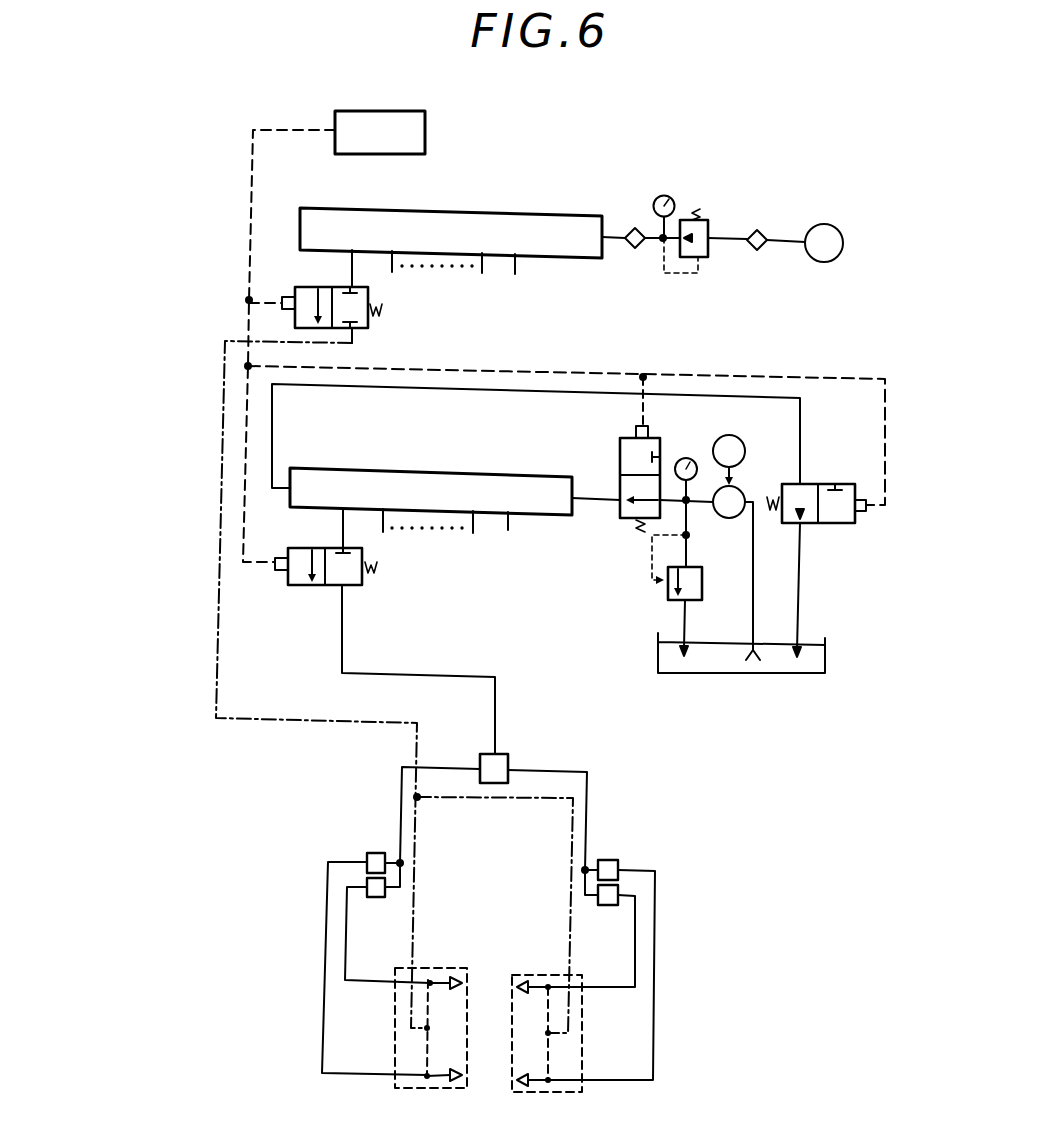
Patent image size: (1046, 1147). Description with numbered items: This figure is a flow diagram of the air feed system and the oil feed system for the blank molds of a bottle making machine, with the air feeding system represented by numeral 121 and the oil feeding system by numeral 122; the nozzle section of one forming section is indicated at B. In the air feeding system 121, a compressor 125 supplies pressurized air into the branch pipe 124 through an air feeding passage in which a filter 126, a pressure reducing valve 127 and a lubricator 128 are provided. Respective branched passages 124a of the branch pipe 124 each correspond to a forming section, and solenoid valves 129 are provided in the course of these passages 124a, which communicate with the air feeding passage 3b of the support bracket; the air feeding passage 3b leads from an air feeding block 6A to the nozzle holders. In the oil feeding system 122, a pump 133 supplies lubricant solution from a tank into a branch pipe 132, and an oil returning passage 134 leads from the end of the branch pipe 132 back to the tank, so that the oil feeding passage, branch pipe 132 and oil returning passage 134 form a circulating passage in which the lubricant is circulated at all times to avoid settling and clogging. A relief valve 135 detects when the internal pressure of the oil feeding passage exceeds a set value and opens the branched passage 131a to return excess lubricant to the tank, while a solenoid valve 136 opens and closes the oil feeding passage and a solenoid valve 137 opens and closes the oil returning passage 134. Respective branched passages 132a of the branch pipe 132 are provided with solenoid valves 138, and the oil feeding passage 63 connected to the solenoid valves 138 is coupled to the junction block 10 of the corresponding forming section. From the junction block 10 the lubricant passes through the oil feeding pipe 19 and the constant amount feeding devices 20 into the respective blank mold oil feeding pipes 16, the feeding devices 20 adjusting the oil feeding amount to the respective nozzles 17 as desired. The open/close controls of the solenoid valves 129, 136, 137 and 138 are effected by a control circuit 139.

The control circuit 139 is at (334, 336).
The branch pipe 124 is at (451, 233).
The branched passages 124a is at (352, 252).
The solenoid valves 129 is at (372, 328).
The air feeding system 121 is at (661, 168).
The lubricator 128 is at (635, 250).
The pressure reducing valve 127 is at (706, 220).
The filter 126 is at (757, 250).
The compressor 125 is at (823, 262).
The oil feeding system 122 is at (769, 371).
The oil returning passage 134 is at (472, 388).
The branch pipe 132 is at (455, 491).
The branched passages 132a is at (343, 512).
The solenoid valves 138 is at (297, 586).
The solenoid valve 136 is at (622, 522).
The pump 133 is at (746, 489).
The solenoid valve 137 is at (833, 525).
The relief valve 135 is at (668, 598).
The branched passage 131a is at (688, 628).
The oil feeding passage 63 is at (343, 646).
The junction block 10 is at (508, 757).
The oil feeding pipe 19 is at (400, 792).
The constant amount feeding devices 20 is at (375, 853).
The air feeding passage 3b is at (416, 815).
The blank mold oil feeding pipes 16 is at (322, 928).
The nozzles 17 is at (457, 977).
The air feeding block 6A is at (397, 1088).
The nozzle section B is at (645, 764).